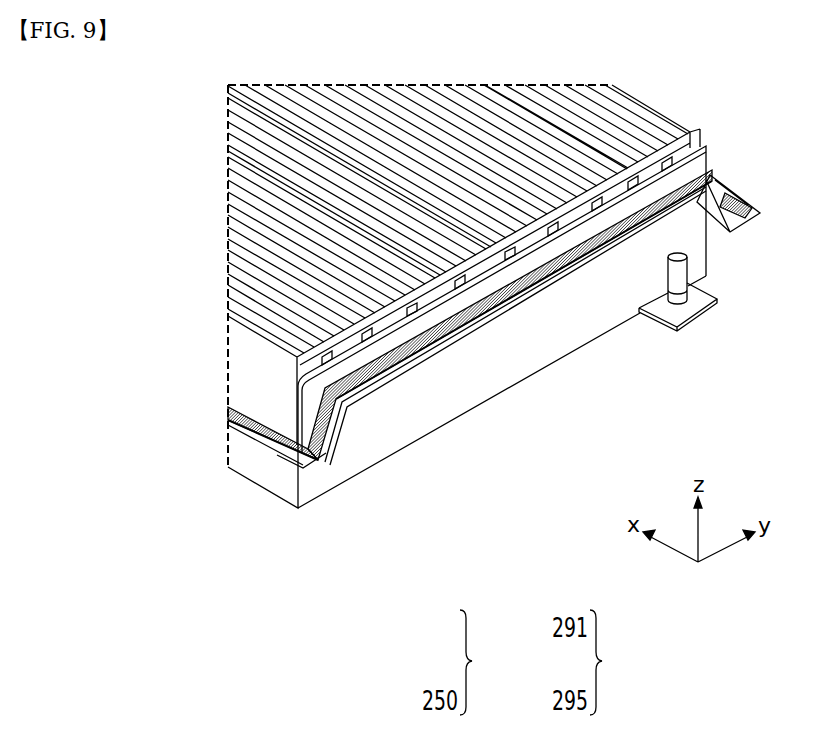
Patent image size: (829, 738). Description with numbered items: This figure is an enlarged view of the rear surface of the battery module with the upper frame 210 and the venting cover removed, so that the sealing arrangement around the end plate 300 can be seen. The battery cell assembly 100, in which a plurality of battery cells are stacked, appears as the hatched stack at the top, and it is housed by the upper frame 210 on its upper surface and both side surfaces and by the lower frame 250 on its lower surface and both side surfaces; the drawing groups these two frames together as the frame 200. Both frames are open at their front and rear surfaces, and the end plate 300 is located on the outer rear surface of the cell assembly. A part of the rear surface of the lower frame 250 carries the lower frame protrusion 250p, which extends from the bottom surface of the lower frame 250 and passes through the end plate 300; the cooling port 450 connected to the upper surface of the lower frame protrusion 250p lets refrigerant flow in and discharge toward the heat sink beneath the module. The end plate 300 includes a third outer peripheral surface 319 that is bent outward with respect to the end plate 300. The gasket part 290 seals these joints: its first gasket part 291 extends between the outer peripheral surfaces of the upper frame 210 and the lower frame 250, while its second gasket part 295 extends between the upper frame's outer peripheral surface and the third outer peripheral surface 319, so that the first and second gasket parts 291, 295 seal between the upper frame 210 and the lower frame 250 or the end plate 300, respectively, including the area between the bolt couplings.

The battery cell assembly 100 is at (268, 393).
The frame 200 is at (486, 662).
The upper frame 210 is at (440, 627).
The lower frame 250 is at (288, 493).
The lower frame protrusion 250p is at (713, 307).
The gasket part 290 is at (616, 662).
The first gasket part 291 is at (240, 423).
The second gasket part 295 is at (710, 174).
The end plate 300 is at (480, 378).
The third outer peripheral surface 319 is at (760, 213).
The cooling port 450 is at (678, 305).